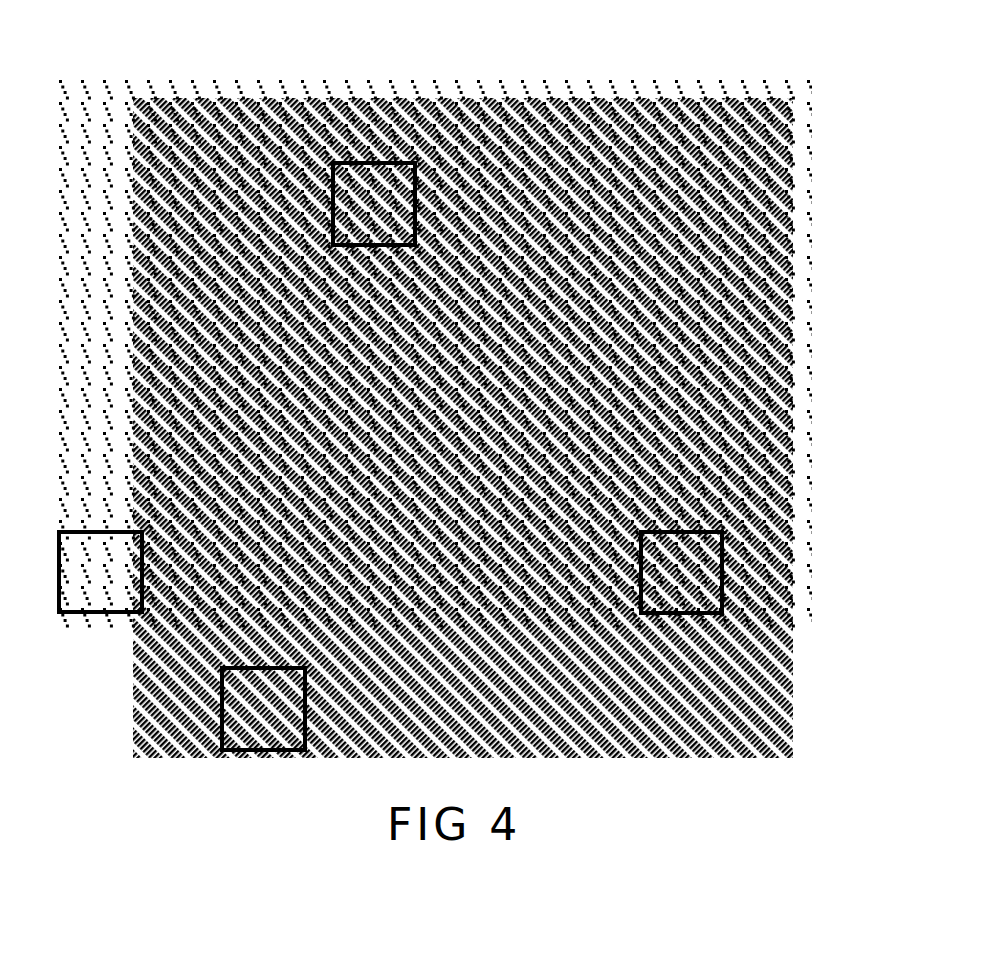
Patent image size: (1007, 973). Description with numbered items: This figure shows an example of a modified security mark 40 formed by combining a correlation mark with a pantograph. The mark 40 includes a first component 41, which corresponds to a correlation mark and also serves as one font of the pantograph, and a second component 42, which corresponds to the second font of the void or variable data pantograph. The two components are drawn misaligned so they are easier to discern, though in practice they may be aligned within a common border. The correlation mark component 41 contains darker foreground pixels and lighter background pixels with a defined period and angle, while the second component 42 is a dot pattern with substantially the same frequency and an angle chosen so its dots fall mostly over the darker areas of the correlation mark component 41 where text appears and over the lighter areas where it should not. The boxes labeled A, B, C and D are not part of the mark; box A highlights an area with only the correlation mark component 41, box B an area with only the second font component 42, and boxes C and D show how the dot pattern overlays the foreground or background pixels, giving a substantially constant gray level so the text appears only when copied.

The mark 40 is at (447, 404).
The first component 41 is at (795, 707).
The second component 42 is at (107, 620).